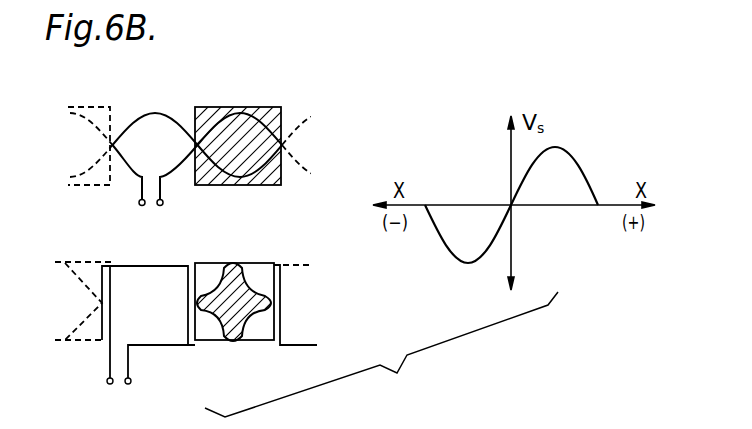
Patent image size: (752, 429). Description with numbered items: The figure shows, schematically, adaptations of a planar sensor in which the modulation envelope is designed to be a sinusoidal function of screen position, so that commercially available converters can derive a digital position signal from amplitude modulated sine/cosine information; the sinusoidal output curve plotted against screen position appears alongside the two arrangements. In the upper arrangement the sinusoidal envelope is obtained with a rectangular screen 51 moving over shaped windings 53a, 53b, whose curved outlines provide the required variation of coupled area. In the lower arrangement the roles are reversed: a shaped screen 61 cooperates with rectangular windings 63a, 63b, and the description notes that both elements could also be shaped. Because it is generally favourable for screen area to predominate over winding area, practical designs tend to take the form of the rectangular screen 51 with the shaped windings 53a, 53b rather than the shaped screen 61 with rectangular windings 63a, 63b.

The rectangular screen 51 is at (259, 181).
The shaped winding 53a is at (153, 112).
The shaped winding 53b is at (214, 178).
The shaped screen 61 is at (233, 342).
The rectangular winding 63a is at (145, 265).
The rectangular winding 63b is at (240, 262).